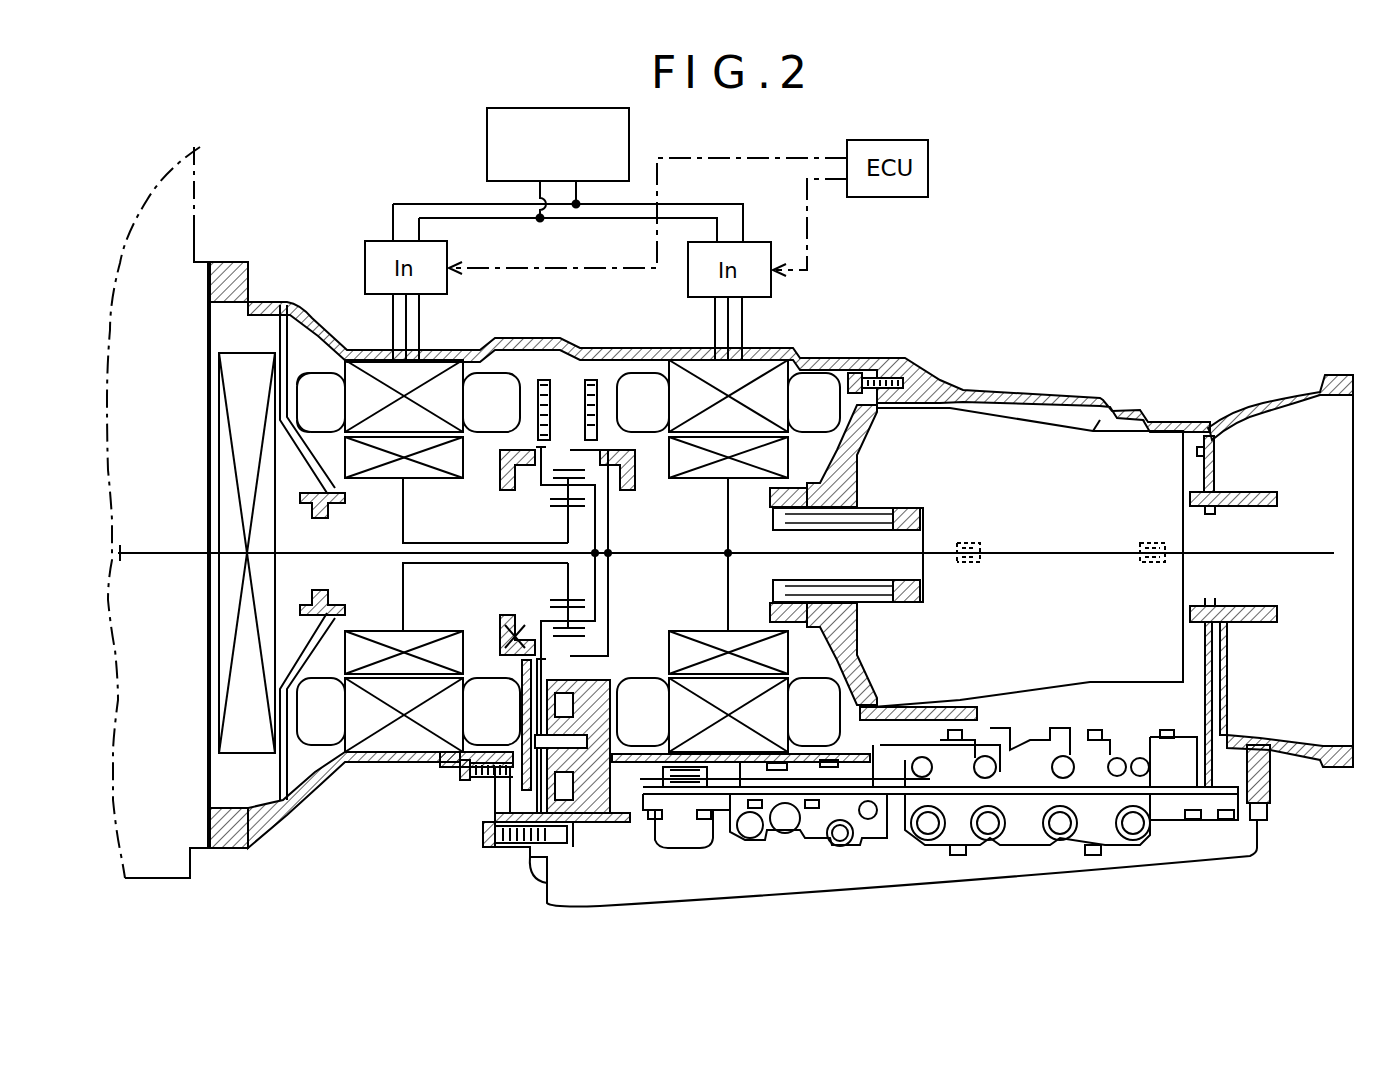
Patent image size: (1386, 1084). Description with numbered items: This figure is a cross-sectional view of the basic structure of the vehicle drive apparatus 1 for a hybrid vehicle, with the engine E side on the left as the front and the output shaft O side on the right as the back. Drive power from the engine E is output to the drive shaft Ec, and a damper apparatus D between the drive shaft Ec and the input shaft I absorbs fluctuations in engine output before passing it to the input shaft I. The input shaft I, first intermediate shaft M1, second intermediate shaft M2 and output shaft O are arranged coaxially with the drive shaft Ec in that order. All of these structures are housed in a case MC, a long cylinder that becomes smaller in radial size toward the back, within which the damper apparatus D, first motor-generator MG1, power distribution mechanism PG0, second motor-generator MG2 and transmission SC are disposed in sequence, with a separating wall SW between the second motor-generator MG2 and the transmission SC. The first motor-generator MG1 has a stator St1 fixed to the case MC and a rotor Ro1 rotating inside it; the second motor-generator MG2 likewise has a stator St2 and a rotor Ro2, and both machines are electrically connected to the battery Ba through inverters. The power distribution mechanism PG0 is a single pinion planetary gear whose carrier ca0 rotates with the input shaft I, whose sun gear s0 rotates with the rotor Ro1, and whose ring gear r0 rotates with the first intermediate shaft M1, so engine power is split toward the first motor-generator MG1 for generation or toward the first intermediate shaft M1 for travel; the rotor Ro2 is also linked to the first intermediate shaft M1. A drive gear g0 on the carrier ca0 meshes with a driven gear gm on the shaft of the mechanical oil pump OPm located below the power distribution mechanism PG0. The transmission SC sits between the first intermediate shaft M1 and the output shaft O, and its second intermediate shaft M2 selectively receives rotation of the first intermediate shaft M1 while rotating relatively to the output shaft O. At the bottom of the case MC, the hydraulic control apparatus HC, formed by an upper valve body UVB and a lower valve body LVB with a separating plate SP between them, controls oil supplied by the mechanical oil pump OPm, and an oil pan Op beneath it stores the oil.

The vehicle drive apparatus 1 is at (1024, 176).
The engine E is at (194, 204).
The drive shaft (crank shaft) Ec is at (165, 552).
The damper apparatus D is at (220, 627).
The input shaft I is at (377, 558).
The battery Ba is at (487, 144).
The first motor-generator MG1 is at (440, 340).
The stator St1 is at (366, 360).
The rotor Ro1 is at (375, 478).
The second motor-generator MG2 is at (758, 340).
The stator St2 is at (647, 372).
The rotor Ro2 is at (698, 480).
The power distribution mechanism PG0 is at (615, 575).
The sun gear s0 is at (568, 528).
The carrier ca0 is at (598, 511).
The ring gear r0 is at (582, 445).
The drive gear g0 is at (530, 645).
The driven gear gm is at (525, 687).
The mechanical oil pump OPm is at (543, 797).
The case MC is at (939, 382).
The transmission SC is at (1110, 428).
The separating wall SW is at (857, 468).
The first intermediate shaft M1 is at (890, 553).
The second intermediate shaft M2 is at (1067, 560).
The output shaft O is at (1288, 553).
The separating plate SP is at (738, 763).
The lower valve body LVB is at (683, 845).
The upper valve body UVB is at (790, 780).
The hydraulic control apparatus HC is at (866, 848).
The oil pan Op is at (1150, 862).